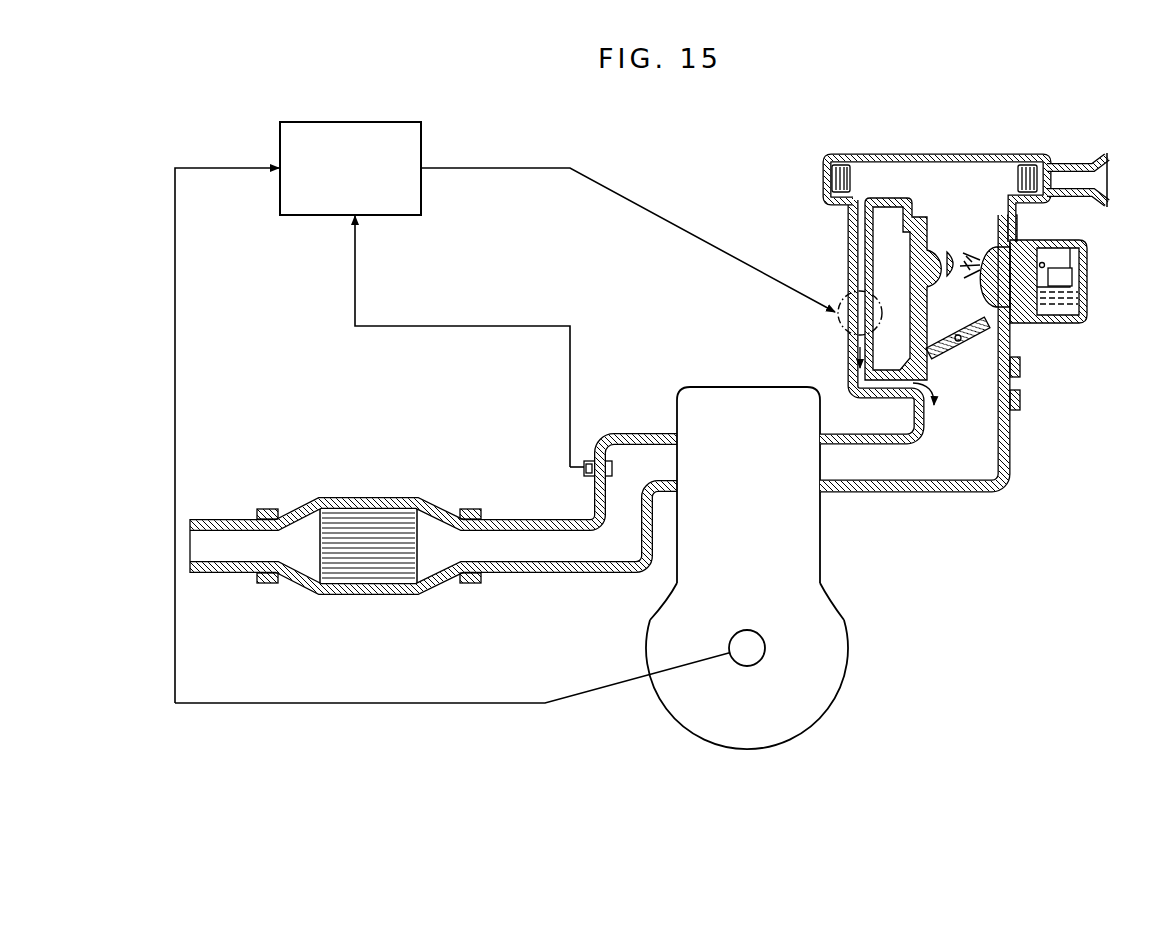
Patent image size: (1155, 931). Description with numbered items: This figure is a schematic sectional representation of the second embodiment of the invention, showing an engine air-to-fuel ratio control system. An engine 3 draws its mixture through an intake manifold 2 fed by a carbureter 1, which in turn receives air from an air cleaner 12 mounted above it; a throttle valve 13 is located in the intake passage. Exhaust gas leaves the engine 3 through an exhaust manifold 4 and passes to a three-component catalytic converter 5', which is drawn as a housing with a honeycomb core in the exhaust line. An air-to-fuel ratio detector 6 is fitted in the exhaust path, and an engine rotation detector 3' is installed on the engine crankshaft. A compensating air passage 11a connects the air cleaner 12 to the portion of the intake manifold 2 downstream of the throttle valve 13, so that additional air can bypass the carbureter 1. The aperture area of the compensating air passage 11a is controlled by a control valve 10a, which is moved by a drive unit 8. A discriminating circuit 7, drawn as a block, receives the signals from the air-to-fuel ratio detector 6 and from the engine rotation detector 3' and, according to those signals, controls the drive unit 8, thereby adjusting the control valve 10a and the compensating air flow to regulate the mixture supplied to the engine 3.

The carbureter 1 is at (1076, 257).
The intake manifold 2 is at (958, 494).
The engine 3 is at (747, 547).
The engine rotation detector 3' is at (721, 671).
The exhaust manifold 4 is at (641, 432).
The three-component catalytic converter 5' is at (433, 520).
The air-to-fuel ratio detector 6 is at (591, 460).
The discriminating circuit 7 is at (412, 122).
The drive unit 8 is at (843, 330).
The control valve 10a is at (858, 312).
The compensating air passage 11a is at (848, 245).
The air cleaner 12 is at (982, 153).
The throttle valve 13 is at (973, 344).